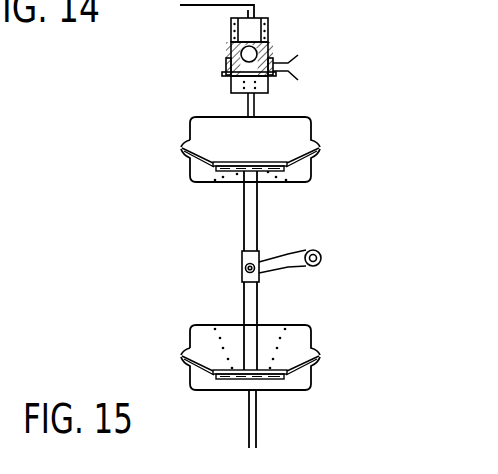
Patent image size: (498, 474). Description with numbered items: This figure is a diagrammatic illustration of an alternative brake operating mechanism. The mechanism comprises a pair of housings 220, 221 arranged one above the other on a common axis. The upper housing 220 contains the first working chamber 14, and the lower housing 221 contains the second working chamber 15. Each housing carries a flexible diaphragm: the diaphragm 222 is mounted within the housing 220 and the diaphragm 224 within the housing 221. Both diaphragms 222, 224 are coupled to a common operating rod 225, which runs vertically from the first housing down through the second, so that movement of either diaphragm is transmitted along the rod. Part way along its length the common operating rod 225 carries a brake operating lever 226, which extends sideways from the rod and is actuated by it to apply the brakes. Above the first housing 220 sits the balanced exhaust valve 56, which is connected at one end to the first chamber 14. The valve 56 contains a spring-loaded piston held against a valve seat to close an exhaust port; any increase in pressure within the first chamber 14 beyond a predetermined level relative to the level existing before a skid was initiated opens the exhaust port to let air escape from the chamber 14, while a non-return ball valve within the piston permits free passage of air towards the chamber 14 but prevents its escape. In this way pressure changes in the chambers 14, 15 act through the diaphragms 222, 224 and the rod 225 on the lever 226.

The balanced exhaust valve 56 is at (276, 45).
The first working chamber 14 is at (208, 127).
The diaphragm 222 is at (307, 118).
The housing 220 is at (310, 173).
The common operating rod 225 is at (250, 300).
The brake operating lever 226 is at (308, 268).
The diaphragm 224 is at (310, 345).
The housing 221 is at (300, 381).
The second working chamber 15 is at (265, 387).